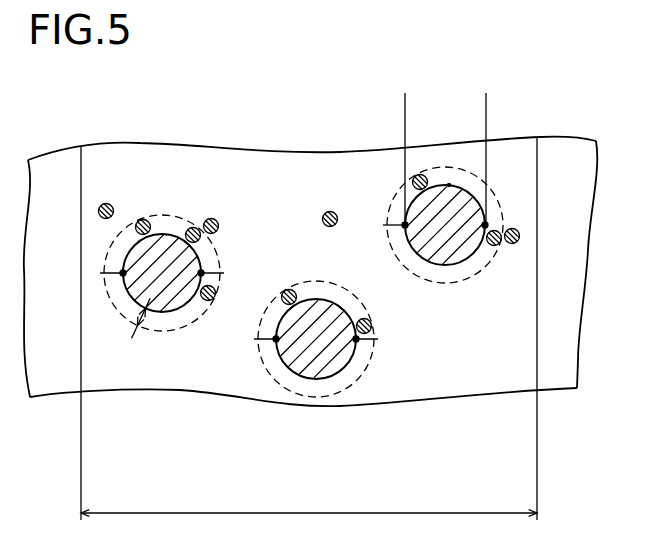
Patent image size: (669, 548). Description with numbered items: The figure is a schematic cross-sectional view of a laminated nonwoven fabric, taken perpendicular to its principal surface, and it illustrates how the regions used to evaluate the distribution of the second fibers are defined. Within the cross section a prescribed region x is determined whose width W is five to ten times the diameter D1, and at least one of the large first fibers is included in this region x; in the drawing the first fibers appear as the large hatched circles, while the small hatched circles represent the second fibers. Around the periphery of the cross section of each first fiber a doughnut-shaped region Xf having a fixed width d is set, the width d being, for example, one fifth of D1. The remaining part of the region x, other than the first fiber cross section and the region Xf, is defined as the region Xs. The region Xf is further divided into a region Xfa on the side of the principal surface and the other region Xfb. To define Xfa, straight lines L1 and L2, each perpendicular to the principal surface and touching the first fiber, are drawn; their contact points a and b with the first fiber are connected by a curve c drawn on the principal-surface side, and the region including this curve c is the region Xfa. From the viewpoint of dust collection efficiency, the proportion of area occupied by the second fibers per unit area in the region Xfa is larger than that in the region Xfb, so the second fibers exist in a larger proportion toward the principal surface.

The prescribed region x is at (322, 92).
The region Xs is at (180, 177).
The doughnut-shaped region Xf is at (447, 453).
The region Xfb is at (331, 377).
The region Xfa is at (355, 301).
The contact point a is at (405, 225).
The contact point b is at (486, 225).
The curve c is at (450, 185).
The width d is at (143, 318).
The straight line L1 is at (401, 147).
The straight line L2 is at (490, 147).
The width W is at (309, 502).